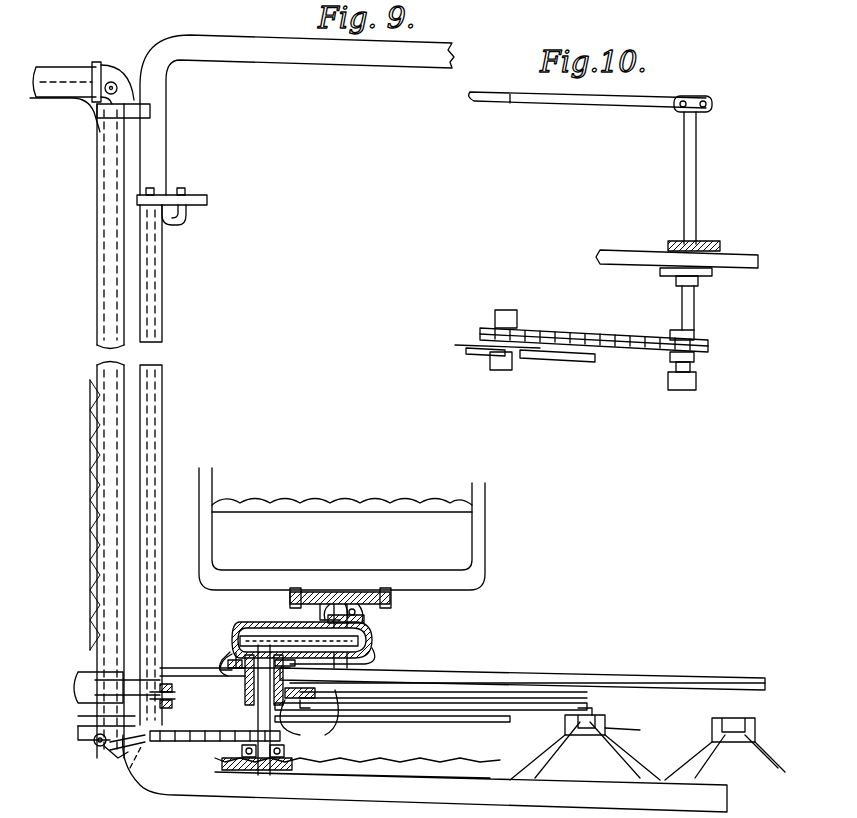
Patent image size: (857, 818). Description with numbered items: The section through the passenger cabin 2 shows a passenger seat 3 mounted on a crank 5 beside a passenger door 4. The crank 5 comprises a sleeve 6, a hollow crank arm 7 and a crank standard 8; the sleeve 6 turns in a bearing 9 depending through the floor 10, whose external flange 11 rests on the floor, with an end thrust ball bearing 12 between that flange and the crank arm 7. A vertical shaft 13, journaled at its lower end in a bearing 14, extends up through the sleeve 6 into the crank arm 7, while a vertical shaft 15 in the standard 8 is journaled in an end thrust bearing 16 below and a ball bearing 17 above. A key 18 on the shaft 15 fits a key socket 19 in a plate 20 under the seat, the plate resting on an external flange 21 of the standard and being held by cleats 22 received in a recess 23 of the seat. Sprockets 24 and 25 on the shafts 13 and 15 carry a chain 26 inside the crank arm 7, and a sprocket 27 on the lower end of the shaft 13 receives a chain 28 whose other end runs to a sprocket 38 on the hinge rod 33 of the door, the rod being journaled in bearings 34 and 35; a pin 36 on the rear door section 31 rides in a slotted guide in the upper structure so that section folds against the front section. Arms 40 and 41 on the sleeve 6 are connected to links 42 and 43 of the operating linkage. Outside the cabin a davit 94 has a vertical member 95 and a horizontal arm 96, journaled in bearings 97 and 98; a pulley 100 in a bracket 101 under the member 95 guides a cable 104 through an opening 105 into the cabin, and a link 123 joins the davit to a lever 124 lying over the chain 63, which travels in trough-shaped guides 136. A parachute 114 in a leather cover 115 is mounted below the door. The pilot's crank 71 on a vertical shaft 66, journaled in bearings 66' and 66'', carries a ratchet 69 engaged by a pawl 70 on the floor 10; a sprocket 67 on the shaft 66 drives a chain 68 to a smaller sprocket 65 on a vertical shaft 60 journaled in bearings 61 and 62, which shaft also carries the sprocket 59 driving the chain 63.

In FIG. 9, the passenger cabin 2 is at (160, 50).
In FIG. 9, the horizontal arm 96 is at (62, 76).
In FIG. 9, the davit 94 is at (100, 130).
In FIG. 9, the bearing 98 is at (150, 112).
In FIG. 9, the vertical member 95 is at (104, 480).
In FIG. 9, the bearing 35 is at (152, 192).
In FIG. 9, the pin 36 is at (183, 195).
In FIG. 9, the door section 31 is at (164, 306).
In FIG. 9, the passenger door 4 is at (158, 382).
In FIG. 9, the hinge rod 33 is at (146, 452).
In FIG. 9, the leather cover 115 is at (80, 672).
In FIG. 9, the parachute 114 is at (103, 685).
In FIG. 9, the bearing 97 is at (80, 728).
In FIG. 9, the pulley 100 is at (94, 742).
In FIG. 9, the bracket 101 is at (108, 752).
In FIG. 9, the sprocket 38 is at (118, 745).
In FIG. 9, the opening 105 is at (132, 768).
In FIG. 9, the passenger seat 3 is at (342, 529).
In FIG. 9, the cleat 22 is at (292, 590).
In FIG. 9, the recess 23 is at (312, 598).
In FIG. 9, the plate 20 is at (330, 598).
In FIG. 9, the key socket 19 is at (350, 598).
In FIG. 9, the key 18 is at (356, 604).
In FIG. 9, the ball bearing 17 is at (365, 604).
In FIG. 9, the crank standard 8 is at (350, 622).
In FIG. 9, the hollow crank arm 7 is at (285, 622).
In FIG. 9, the chain 26 is at (290, 640).
In FIG. 9, the vertical shaft 15 is at (368, 636).
In FIG. 9, the sprocket 25 is at (372, 654).
In FIG. 9, the external flange 21 is at (390, 604).
In FIG. 9, the sprocket 24 is at (238, 640).
In FIG. 9, the vertical shaft 13 is at (258, 722).
In FIG. 9, the end thrust ball bearing 12 is at (245, 668).
In FIG. 9, the bearing 9 is at (248, 690).
In FIG. 9, the crank 5 is at (230, 658).
In FIG. 9, the external flange 11 is at (225, 660).
In FIG. 9, the link 123 is at (230, 660).
In FIG. 9, the lever 124 is at (200, 680).
In FIG. 9, the bearing 34 is at (167, 707).
In FIG. 9, the arm 41 is at (170, 704).
In FIG. 9, the floor 10 is at (462, 680).
In FIG. 10, the floor 10 is at (618, 258).
In FIG. 9, the end thrust bearing 16 is at (372, 670).
In FIG. 9, the link 42 is at (392, 702).
In FIG. 9, the link 43 is at (438, 718).
In FIG. 9, the arm 40 is at (290, 698).
In FIG. 9, the sleeve 6 is at (309, 721).
In FIG. 9, the chain 28 is at (305, 742).
In FIG. 9, the sprocket 27 is at (284, 750).
In FIG. 9, the bearing 14 is at (245, 770).
In FIG. 9, the cable 104 is at (482, 768).
In FIG. 9, the chain 63 is at (592, 730).
In FIG. 10, the chain 63 is at (570, 360).
In FIG. 9, the trough-shaped guide 136 is at (712, 738).
In FIG. 10, the crank 71 is at (558, 103).
In FIG. 10, the pawl 70 is at (722, 250).
In FIG. 10, the ratchet 69 is at (705, 243).
In FIG. 10, the bearing 66'' is at (702, 277).
In FIG. 10, the vertical shaft 66 is at (672, 308).
In FIG. 10, the chain 68 is at (576, 335).
In FIG. 10, the bearing 62 is at (517, 318).
In FIG. 10, the sprocket 65 is at (480, 334).
In FIG. 10, the vertical shaft 60 is at (456, 346).
In FIG. 10, the sprocket 59 is at (470, 354).
In FIG. 10, the bearing 61 is at (512, 366).
In FIG. 10, the sprocket 67 is at (700, 340).
In FIG. 10, the bearing 66' is at (692, 381).